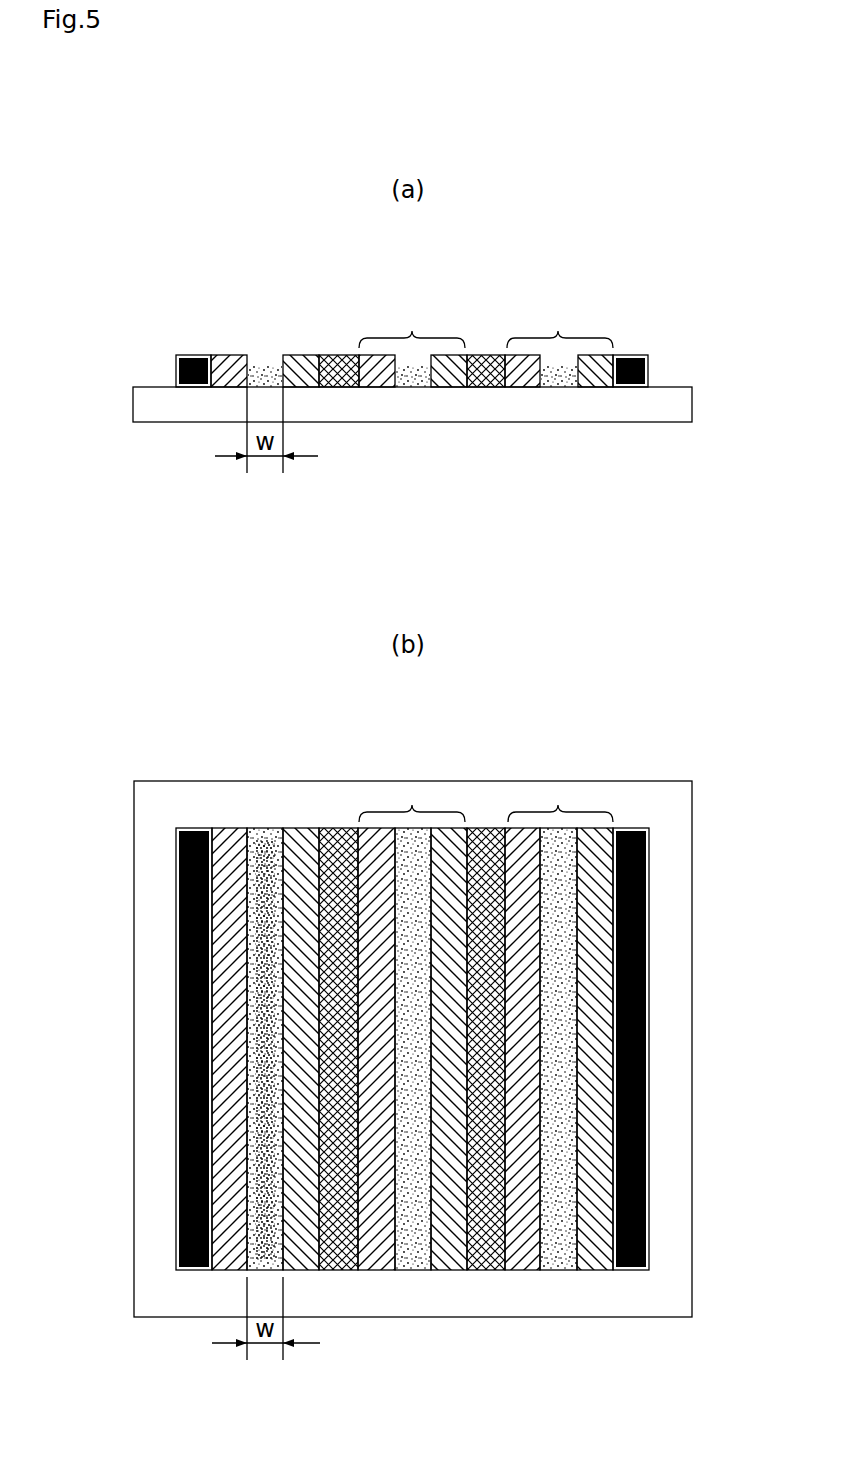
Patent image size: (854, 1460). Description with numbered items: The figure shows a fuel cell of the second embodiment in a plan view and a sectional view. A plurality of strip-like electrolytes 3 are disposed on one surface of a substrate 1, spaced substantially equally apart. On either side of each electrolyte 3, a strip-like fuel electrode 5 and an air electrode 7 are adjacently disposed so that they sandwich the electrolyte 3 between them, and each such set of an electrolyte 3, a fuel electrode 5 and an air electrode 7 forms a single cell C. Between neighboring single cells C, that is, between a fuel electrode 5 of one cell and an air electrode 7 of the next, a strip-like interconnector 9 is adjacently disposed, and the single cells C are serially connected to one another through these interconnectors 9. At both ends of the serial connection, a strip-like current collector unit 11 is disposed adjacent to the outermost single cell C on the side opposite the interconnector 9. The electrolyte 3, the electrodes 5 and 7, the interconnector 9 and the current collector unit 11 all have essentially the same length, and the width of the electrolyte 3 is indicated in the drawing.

The substrate 1 is at (630, 405).
The electrolyte 3 is at (264, 372).
The fuel electrode 5 is at (234, 376).
The air electrode 7 is at (300, 376).
The interconnector 9 is at (337, 375).
The current collector unit 11 is at (200, 355).
The single cell C is at (486, 562).